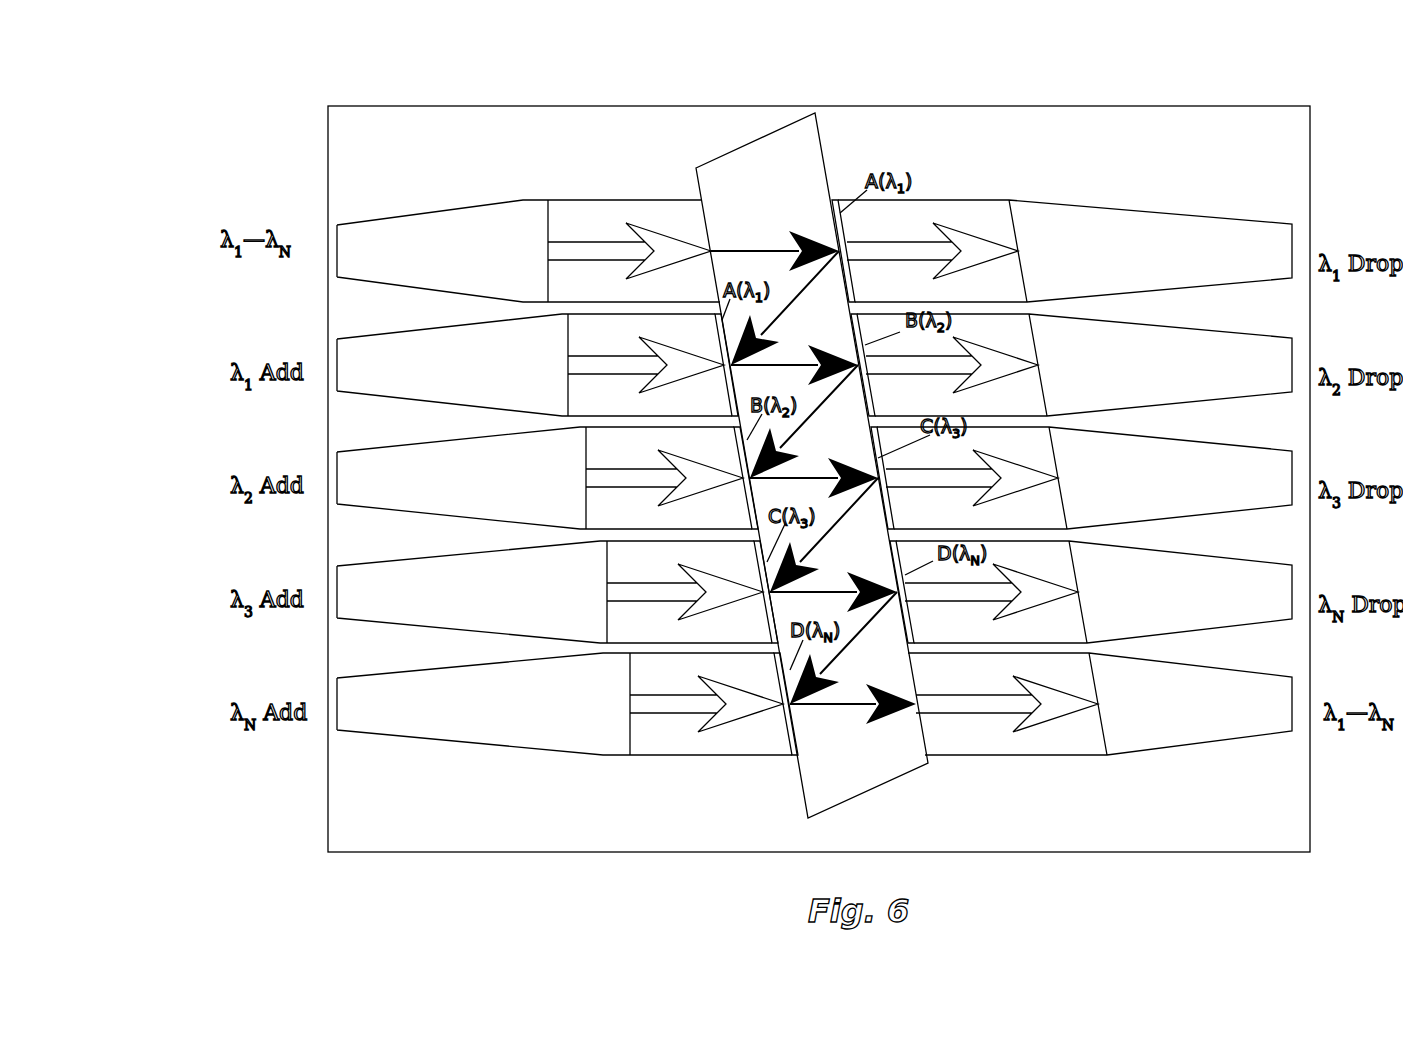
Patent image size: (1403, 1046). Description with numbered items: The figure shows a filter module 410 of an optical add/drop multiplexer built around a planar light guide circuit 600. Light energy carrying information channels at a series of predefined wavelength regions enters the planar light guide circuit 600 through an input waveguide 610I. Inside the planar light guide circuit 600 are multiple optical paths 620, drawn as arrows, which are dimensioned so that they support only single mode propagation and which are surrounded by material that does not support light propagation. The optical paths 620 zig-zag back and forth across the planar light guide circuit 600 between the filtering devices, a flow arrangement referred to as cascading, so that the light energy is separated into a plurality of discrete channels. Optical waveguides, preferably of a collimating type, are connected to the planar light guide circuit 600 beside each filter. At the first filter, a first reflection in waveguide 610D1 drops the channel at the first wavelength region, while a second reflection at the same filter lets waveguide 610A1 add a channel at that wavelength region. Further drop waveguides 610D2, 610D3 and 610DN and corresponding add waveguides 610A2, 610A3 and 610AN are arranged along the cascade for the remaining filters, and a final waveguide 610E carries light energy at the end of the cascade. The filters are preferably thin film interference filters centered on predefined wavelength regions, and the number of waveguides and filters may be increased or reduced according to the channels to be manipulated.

The filter module 410 is at (975, 138).
The planar light guide circuit 600 is at (798, 177).
The input waveguide 610I is at (455, 208).
The add waveguide 610A1 is at (397, 352).
The optical waveguide 610A2 is at (410, 472).
The optical waveguide 610A3 is at (420, 593).
The optical waveguide 610AN is at (413, 703).
The drop waveguide 610D1 is at (1178, 238).
The optical waveguide 610D2 is at (1203, 363).
The optical waveguide 610D3 is at (1222, 467).
The optical waveguide 610DN is at (1203, 603).
The optical waveguide 610E is at (1210, 690).
The optical paths 620 is at (727, 250).